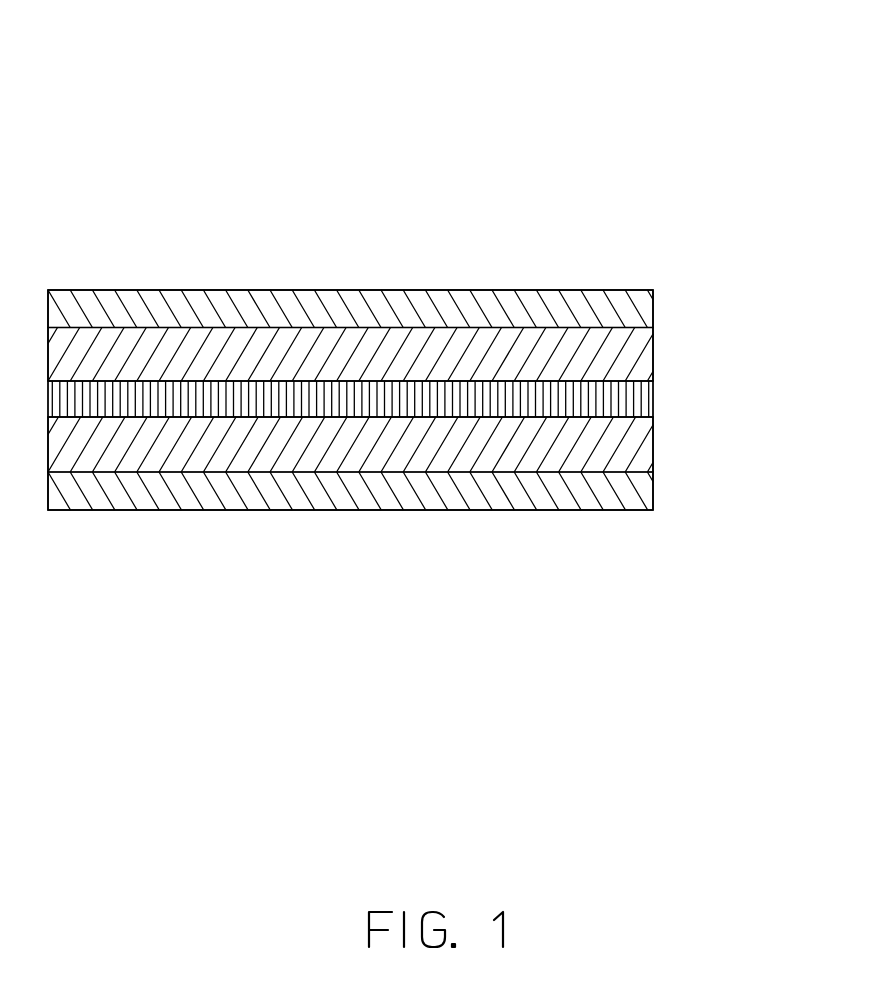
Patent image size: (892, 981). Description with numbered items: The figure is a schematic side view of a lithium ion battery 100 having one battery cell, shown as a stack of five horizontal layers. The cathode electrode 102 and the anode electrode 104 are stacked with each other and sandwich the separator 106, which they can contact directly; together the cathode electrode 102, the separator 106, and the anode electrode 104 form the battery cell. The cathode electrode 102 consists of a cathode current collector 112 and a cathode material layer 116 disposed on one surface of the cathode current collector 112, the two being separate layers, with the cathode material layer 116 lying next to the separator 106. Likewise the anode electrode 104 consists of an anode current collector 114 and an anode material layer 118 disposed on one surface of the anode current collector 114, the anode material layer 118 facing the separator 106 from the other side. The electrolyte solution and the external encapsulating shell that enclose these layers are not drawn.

The lithium ion battery 100 is at (386, 152).
The cathode electrode 102 is at (752, 233).
The anode electrode 104 is at (754, 417).
The separator 106 is at (645, 403).
The cathode current collector 112 is at (627, 302).
The anode current collector 114 is at (635, 500).
The cathode material layer 116 is at (640, 360).
The anode material layer 118 is at (628, 443).